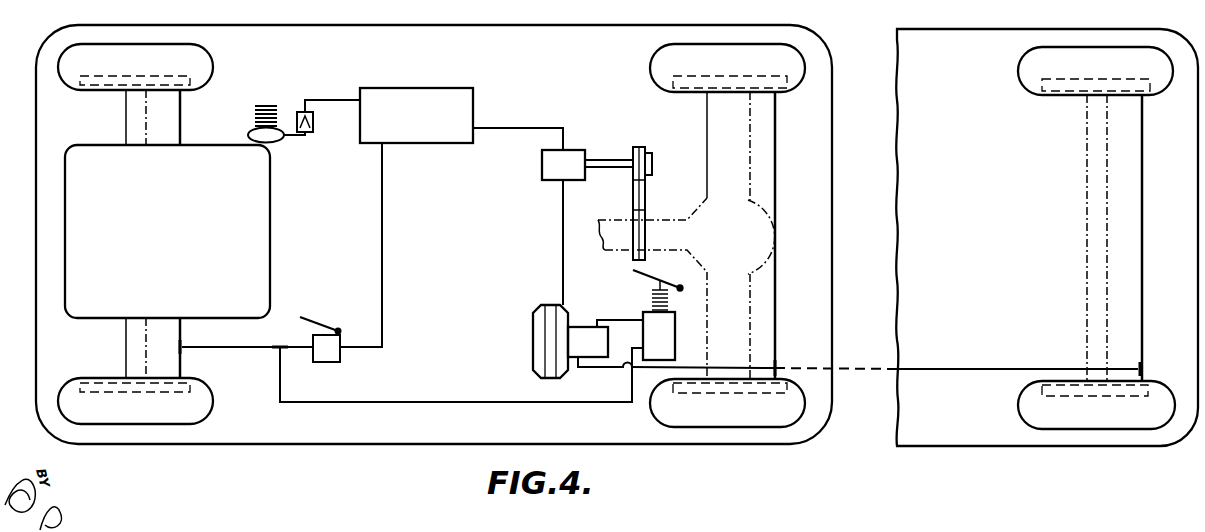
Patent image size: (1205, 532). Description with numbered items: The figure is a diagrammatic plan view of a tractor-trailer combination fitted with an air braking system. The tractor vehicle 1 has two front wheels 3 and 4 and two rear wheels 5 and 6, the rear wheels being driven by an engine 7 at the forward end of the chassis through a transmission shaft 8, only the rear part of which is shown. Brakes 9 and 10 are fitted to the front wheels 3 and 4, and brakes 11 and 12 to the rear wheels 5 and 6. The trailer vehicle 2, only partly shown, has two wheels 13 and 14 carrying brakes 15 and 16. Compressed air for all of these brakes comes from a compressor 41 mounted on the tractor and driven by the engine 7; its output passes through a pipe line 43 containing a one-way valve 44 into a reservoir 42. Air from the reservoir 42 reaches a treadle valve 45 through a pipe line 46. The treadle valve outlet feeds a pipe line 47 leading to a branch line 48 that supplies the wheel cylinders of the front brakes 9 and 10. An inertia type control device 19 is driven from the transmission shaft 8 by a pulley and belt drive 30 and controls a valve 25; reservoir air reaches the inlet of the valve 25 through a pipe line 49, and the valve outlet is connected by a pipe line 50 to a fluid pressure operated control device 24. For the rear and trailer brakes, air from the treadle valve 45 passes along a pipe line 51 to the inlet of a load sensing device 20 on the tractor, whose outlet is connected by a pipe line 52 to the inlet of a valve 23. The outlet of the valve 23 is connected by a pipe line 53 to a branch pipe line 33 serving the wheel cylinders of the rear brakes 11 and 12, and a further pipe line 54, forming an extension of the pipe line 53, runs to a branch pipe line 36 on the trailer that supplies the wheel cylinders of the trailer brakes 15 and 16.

The tractor vehicle 1 is at (326, 446).
The trailer vehicle 2 is at (966, 448).
The front wheel 3 is at (204, 61).
The front wheel 4 is at (203, 406).
The rear wheel 5 is at (660, 62).
The rear wheel 6 is at (806, 408).
The engine 7 is at (278, 270).
The transmission shaft 8 is at (666, 224).
The brake 9 is at (116, 88).
The brake 10 is at (88, 382).
The brake 11 is at (780, 92).
The brake 12 is at (678, 394).
The trailer wheel 13 is at (1028, 64).
The trailer wheel 14 is at (1032, 404).
The brake 15 is at (1144, 94).
The brake 16 is at (1148, 390).
The inertia type control device 19 is at (645, 149).
The load sensing device 20 is at (680, 336).
The valve 23 is at (587, 321).
The fluid pressure operated control device 24 is at (546, 330).
The valve 25 is at (552, 162).
The pulley and belt drive 30 is at (636, 194).
The branch pipe line 33 is at (778, 252).
The branch pipe line 36 is at (1143, 258).
The compressor 41 is at (262, 106).
The reservoir 42 is at (412, 94).
The pipe line 43 is at (330, 100).
The one-way valve 44 is at (313, 122).
The treadle valve 45 is at (332, 358).
The pipe line 46 is at (384, 286).
The pipe line 47 is at (228, 349).
The branch line 48 is at (178, 221).
The pipe line 49 is at (512, 128).
The pipe line 50 is at (562, 258).
The pipe line 51 is at (400, 403).
The pipe line 52 is at (606, 319).
The pipe line 53 is at (604, 368).
The pipe line 54 is at (778, 368).